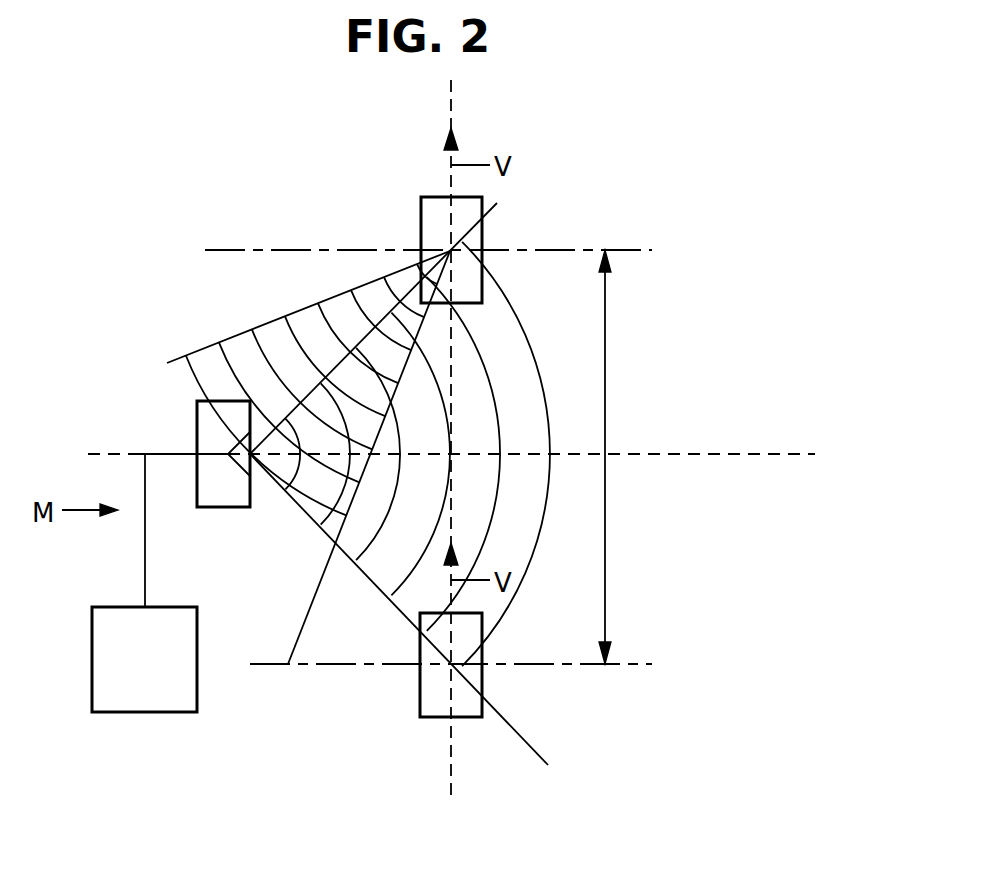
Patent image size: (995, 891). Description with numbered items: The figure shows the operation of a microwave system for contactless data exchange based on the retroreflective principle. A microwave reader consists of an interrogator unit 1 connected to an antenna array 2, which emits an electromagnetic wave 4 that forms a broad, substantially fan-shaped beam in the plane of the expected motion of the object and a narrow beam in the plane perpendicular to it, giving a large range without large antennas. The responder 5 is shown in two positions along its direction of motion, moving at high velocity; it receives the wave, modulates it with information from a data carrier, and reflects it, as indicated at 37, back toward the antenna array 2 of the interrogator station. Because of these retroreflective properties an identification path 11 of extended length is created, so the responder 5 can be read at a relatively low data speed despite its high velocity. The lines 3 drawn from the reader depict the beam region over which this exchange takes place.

The interrogator unit 1 is at (143, 712).
The antenna array 2 is at (203, 423).
The sound beam 3 is at (303, 310).
The electromagnetic wave 4 is at (482, 338).
The responder 5 is at (437, 203).
The identification path 11 is at (610, 512).
The reflected wave 37 is at (375, 305).